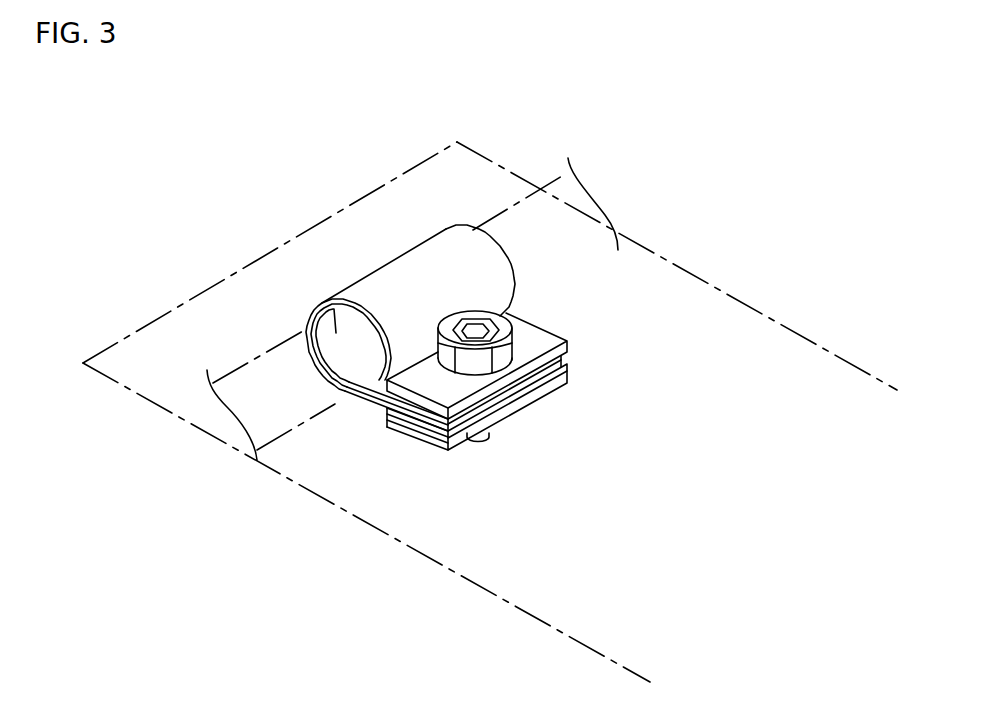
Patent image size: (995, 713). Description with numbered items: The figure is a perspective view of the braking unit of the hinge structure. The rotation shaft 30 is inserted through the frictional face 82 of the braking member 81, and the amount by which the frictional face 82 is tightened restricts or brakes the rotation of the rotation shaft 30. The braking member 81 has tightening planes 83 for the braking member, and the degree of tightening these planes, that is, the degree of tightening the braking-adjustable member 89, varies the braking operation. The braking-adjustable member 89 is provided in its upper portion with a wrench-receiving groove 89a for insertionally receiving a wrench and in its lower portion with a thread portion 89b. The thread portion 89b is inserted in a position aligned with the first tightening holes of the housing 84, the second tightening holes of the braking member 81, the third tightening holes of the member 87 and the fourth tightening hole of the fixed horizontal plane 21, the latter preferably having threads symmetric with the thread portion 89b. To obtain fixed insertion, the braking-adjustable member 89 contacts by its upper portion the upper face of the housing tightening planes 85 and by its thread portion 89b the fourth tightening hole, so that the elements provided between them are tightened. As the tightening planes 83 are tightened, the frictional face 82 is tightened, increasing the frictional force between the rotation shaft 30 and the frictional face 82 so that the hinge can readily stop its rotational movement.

The fixed horizontal plane 21 is at (573, 602).
The rotation shaft 30 is at (257, 408).
The braking member 81 is at (513, 410).
The frictional face 82 is at (322, 328).
The tightening planes for braking member 83 is at (367, 397).
The housing 84 is at (540, 338).
The housing tightening planes 85 is at (433, 370).
The element with third tightening holes 87 is at (547, 378).
The braking-adjustable member 89 is at (505, 342).
The wrench-receiving groove 89a is at (475, 327).
The thread portion 89b is at (483, 441).